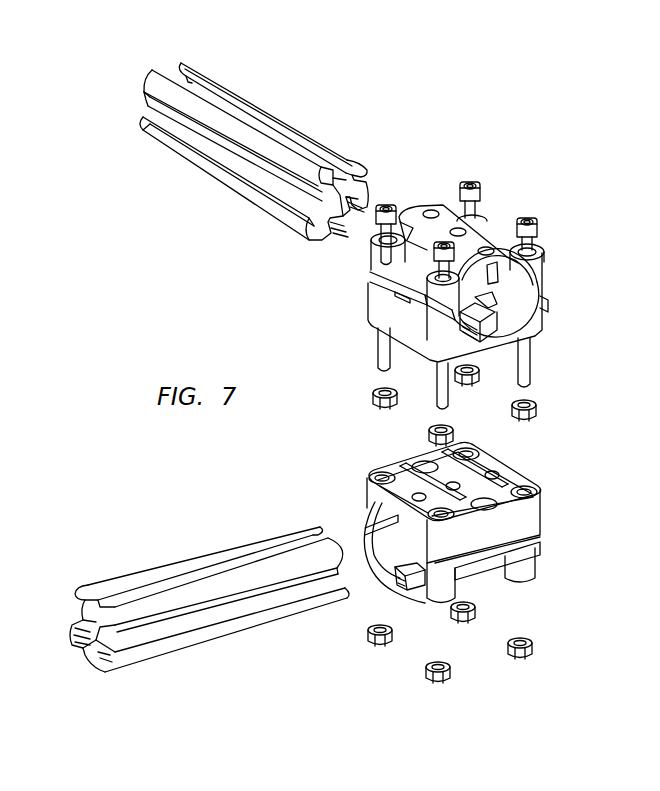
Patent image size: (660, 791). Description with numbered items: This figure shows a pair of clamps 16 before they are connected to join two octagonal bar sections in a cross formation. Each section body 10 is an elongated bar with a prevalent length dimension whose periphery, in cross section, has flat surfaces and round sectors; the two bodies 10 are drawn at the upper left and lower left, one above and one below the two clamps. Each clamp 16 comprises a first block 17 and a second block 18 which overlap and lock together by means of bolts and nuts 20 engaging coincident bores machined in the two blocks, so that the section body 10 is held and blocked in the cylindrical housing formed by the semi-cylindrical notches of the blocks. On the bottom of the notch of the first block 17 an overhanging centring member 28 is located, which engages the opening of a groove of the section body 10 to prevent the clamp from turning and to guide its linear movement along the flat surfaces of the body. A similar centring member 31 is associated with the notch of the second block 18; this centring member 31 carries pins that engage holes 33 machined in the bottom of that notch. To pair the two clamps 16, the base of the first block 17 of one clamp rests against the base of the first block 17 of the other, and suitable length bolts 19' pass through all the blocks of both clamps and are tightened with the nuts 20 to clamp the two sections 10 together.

The section body 10 is at (335, 137).
The clamp 16 is at (546, 515).
The first block 17 is at (547, 320).
The second block 18 is at (547, 262).
The suitable length bolts 19' is at (486, 230).
The nuts 20 is at (533, 650).
The centring member 28 is at (530, 347).
The centring member 31 is at (496, 266).
The holes 33 is at (432, 205).